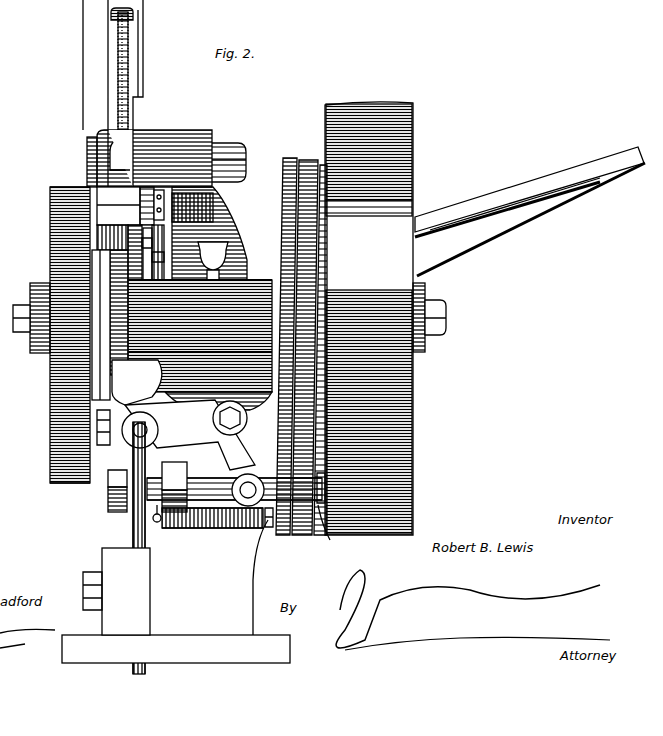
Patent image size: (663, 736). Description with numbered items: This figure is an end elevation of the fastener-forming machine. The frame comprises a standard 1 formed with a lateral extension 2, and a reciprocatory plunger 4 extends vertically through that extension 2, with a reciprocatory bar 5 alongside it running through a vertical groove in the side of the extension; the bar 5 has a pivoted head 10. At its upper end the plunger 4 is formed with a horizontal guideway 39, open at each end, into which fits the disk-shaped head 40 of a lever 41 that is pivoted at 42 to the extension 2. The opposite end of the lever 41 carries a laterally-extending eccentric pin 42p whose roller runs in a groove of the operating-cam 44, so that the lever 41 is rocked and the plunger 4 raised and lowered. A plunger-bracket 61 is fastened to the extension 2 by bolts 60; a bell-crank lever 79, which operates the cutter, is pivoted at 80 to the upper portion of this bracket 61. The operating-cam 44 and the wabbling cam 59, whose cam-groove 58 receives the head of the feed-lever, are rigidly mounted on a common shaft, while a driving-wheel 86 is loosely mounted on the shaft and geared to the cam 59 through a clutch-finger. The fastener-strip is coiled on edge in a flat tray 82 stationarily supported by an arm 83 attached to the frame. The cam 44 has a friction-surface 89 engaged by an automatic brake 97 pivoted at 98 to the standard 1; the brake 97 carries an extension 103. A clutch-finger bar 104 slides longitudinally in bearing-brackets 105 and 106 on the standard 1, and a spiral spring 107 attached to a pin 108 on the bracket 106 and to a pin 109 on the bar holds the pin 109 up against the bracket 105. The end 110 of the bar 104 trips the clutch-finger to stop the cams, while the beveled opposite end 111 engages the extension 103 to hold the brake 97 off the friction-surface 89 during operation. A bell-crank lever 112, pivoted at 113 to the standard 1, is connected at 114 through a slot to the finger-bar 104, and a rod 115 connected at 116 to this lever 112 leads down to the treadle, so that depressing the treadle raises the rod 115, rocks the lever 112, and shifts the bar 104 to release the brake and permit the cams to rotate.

The standard 1 is at (167, 387).
The lateral extension 2 is at (215, 230).
The reciprocatory plunger 4 is at (143, 57).
The reciprocatory bar 5 is at (90, 37).
The pivoted head 10 is at (14, 17).
The horizontal guideway 39 is at (133, 28).
The disk-shaped head 40 is at (137, 13).
The lever 41 is at (118, 87).
The pivot 42 is at (100, 137).
The eccentric pin 42p is at (90, 193).
The operating-cam 44 is at (50, 430).
The cam-groove 58 is at (302, 180).
The wabbling cam 59 is at (280, 173).
The bolts 60 is at (123, 272).
The plunger-bracket 61 is at (155, 267).
The bell-crank lever 79 is at (147, 277).
The pivot screw 80 is at (147, 247).
The tray 82 is at (535, 185).
The arm 83 is at (493, 227).
The driving-wheel 86 is at (385, 318).
The friction-surface 89 is at (100, 310).
The automatic brake 97 is at (117, 440).
The brake pivot 98 is at (77, 420).
The brake extension 103 is at (123, 500).
The clutch-finger bar 104 is at (200, 493).
The bearing-bracket 105 is at (160, 528).
The bearing-bracket 106 is at (268, 527).
The spiral spring 107 is at (223, 530).
The pin 108 is at (267, 533).
The finger-bar pin 109 is at (158, 507).
The end of clutch-finger bar 110 is at (320, 527).
The beveled end 111 is at (123, 502).
The bell-crank lever 112 is at (190, 435).
The pivot 113 is at (230, 430).
The connection 114 is at (258, 490).
The rod 115 is at (145, 605).
The connection 116 is at (135, 440).